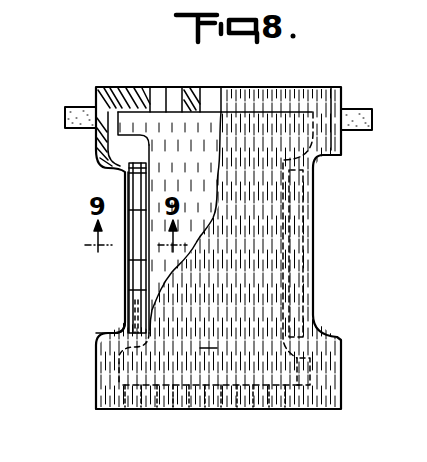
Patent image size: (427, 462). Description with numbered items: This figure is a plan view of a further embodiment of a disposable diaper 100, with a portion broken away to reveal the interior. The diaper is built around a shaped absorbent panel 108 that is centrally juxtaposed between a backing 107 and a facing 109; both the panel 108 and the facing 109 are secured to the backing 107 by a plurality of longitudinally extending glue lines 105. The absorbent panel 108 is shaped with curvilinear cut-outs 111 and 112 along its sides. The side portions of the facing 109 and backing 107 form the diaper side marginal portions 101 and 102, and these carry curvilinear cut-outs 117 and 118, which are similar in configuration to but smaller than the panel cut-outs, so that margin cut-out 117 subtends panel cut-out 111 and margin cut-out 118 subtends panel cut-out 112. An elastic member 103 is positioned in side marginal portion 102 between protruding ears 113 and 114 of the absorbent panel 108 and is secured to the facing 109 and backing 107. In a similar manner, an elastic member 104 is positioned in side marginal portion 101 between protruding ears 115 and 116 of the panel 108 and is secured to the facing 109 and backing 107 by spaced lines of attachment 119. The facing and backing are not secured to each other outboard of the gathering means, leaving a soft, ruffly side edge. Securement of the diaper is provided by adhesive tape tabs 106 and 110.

The disposable diaper 100 is at (318, 68).
The diaper side marginal portion 101 is at (326, 158).
The diaper side marginal portion 102 is at (94, 337).
The elastic member 103 is at (123, 172).
The elastic member 104 is at (302, 246).
The glue lines 105 is at (225, 88).
The adhesive tape tab 106 is at (73, 110).
The backing 107 is at (97, 144).
The shaped absorbent panel 108 is at (210, 226).
The facing 109 is at (218, 248).
The adhesive tape tab 110 is at (367, 111).
The curvilinear cut-out 111 is at (283, 214).
The curvilinear cut-out 112 is at (122, 311).
The protruding ear 113 is at (122, 372).
The protruding ear 114 is at (123, 128).
The protruding ear 115 is at (300, 116).
The protruding ear 116 is at (298, 375).
The curvilinear margin cut-out 117 is at (311, 290).
The curvilinear margin cut-out 118 is at (112, 328).
The spaced lines of attachment 119 is at (122, 278).